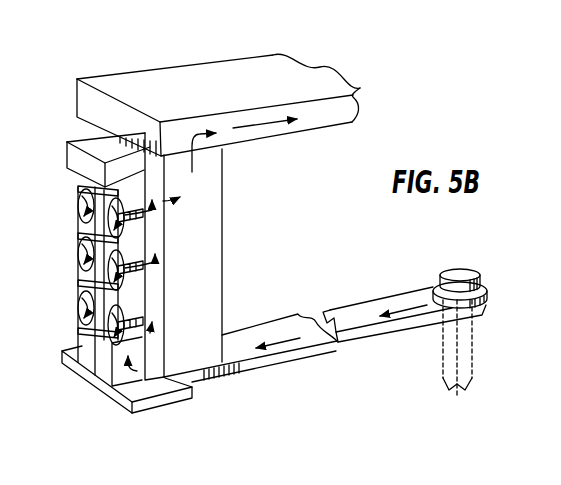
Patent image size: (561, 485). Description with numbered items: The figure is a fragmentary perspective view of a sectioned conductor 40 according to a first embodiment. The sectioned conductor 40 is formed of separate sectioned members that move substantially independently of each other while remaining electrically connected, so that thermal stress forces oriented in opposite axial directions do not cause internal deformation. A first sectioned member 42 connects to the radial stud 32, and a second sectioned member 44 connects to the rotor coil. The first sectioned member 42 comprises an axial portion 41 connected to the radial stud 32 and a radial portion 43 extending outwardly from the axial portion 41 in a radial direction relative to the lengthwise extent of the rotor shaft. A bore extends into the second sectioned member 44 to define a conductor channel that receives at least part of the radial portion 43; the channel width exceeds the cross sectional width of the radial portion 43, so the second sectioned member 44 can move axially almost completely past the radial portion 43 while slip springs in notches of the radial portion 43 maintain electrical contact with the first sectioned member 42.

The sectioned conductor 40 is at (386, 112).
The axial portion 41 is at (300, 361).
The first sectioned member 42 is at (220, 388).
The radial portion 43 is at (77, 298).
The second sectioned member 44 is at (254, 152).
The radial stud 32 is at (480, 330).